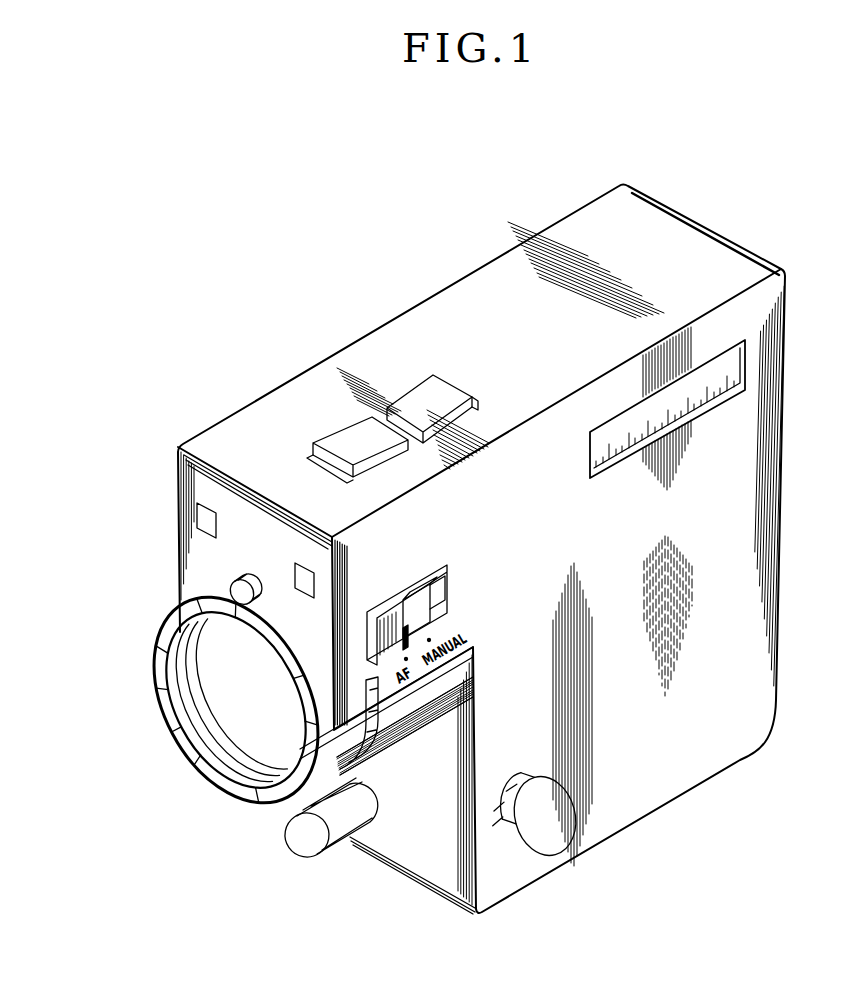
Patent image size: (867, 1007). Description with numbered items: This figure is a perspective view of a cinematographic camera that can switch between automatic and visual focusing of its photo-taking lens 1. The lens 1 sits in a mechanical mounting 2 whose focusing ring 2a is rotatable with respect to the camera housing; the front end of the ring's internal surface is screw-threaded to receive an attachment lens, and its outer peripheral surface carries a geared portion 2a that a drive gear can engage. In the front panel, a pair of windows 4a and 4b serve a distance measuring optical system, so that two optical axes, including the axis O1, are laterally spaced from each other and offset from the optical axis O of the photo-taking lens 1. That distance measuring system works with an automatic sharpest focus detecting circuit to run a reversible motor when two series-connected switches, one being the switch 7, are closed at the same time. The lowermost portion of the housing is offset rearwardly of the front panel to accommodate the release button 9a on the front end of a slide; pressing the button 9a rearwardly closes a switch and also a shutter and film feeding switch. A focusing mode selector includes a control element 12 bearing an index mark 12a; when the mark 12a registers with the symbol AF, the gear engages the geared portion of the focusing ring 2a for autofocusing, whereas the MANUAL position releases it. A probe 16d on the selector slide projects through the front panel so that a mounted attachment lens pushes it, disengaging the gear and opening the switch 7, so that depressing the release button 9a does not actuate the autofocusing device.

The photo-taking lens 1 is at (250, 742).
The mechanical mounting 2 is at (197, 760).
The focusing ring 2a is at (378, 738).
The window 4a is at (216, 522).
The window 4b is at (296, 576).
The switch 7 is at (643, 792).
The release button 9a is at (305, 835).
The control element 12 is at (418, 600).
The index mark 12a is at (405, 628).
The probe 16d is at (237, 576).
The optical axis O is at (238, 694).
The optical axis O1 is at (214, 516).